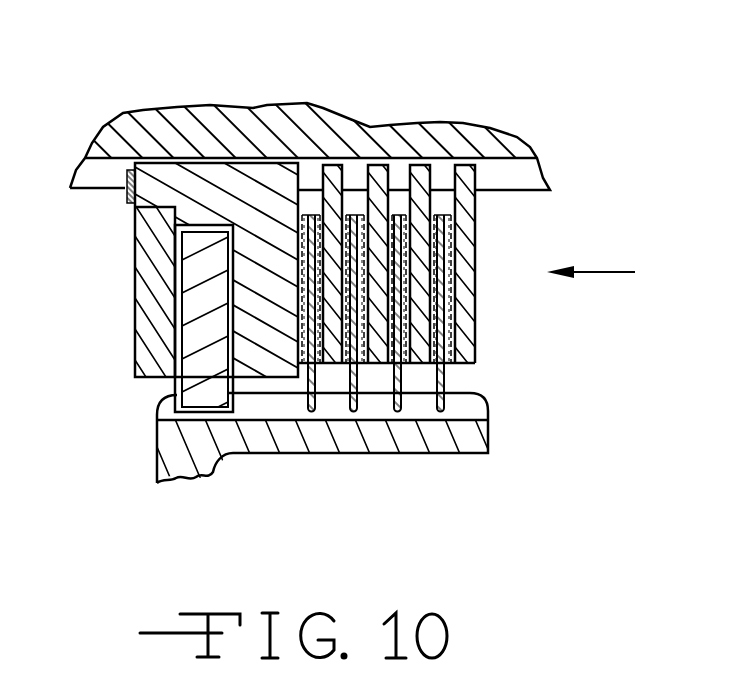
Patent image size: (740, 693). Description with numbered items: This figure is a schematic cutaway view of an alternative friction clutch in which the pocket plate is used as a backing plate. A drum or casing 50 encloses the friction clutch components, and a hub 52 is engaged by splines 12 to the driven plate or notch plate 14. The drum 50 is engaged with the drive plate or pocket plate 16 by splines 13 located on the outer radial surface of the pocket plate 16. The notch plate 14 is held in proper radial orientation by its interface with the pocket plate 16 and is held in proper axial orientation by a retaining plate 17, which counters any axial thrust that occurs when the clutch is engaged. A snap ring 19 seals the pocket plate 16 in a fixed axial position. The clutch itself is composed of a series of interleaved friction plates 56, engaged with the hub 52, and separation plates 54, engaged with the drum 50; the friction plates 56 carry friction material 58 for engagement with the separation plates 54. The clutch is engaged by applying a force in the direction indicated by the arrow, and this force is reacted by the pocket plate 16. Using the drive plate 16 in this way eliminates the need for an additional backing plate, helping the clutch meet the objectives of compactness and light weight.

The inner radial splines 12 is at (203, 393).
The splines 13 is at (233, 183).
The notch plate 14 is at (207, 368).
The pocket plate 16 is at (253, 268).
The retaining plate 17 is at (148, 350).
The snap ring 19 is at (123, 160).
The drum 50 is at (179, 122).
The hub 52 is at (313, 440).
The separation plates 54 is at (463, 160).
The friction plates 56 is at (318, 377).
The friction material 58 is at (305, 347).